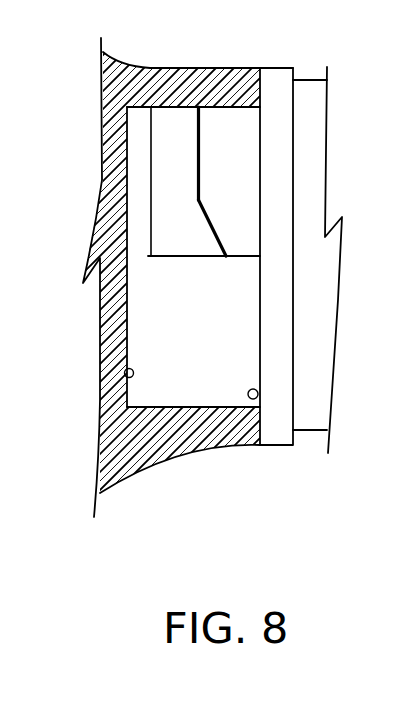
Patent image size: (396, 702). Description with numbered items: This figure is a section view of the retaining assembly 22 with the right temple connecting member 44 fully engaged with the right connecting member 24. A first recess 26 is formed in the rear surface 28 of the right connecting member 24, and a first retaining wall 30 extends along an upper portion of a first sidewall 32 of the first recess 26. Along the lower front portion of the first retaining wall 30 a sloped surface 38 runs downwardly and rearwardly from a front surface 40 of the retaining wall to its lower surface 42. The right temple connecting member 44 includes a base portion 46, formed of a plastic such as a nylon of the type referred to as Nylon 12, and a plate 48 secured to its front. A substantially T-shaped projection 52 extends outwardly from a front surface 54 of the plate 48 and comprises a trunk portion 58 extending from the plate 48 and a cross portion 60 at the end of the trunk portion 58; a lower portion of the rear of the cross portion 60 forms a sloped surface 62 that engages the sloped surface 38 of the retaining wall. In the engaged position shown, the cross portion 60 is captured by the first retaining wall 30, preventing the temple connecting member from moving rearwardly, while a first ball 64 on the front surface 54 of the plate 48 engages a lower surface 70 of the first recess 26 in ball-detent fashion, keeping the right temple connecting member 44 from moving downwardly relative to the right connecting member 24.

The housing body 12 is at (131, 468).
The retaining assembly 22 is at (86, 216).
The right connecting member 24 is at (92, 90).
The first recess 26 is at (124, 377).
The rear surface 28 is at (260, 159).
The first retaining wall 30 is at (225, 125).
The first sidewall 32 is at (137, 136).
The sloped surface 38 is at (210, 232).
The front surface 40 is at (208, 148).
The lower surface 42 is at (237, 257).
The right temple connecting member 44 is at (270, 62).
The base portion 46 is at (312, 97).
The plate 48 is at (279, 430).
The substantially T-shaped projection 52 is at (188, 257).
The front surface 54 is at (260, 345).
The trunk portion 58 is at (246, 244).
The cross portion 60 is at (150, 257).
The sloped surface 62 is at (205, 207).
The first ball 64 is at (248, 391).
The lower surface 70 is at (200, 408).